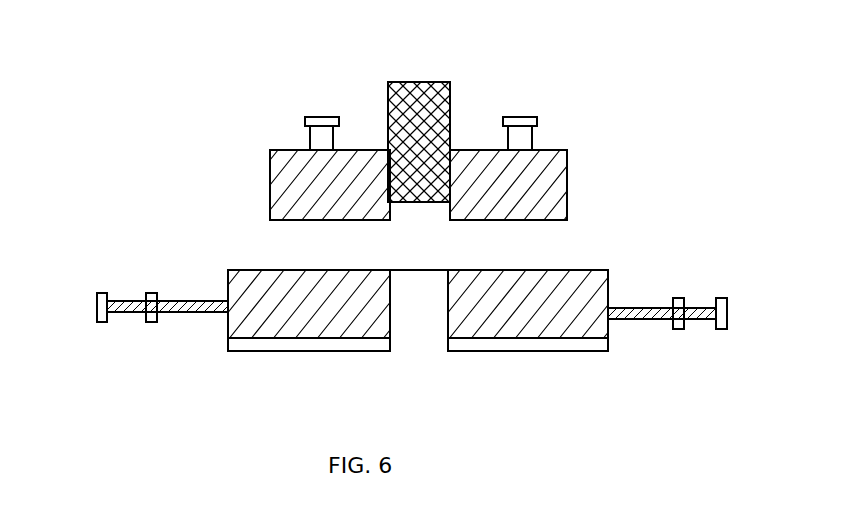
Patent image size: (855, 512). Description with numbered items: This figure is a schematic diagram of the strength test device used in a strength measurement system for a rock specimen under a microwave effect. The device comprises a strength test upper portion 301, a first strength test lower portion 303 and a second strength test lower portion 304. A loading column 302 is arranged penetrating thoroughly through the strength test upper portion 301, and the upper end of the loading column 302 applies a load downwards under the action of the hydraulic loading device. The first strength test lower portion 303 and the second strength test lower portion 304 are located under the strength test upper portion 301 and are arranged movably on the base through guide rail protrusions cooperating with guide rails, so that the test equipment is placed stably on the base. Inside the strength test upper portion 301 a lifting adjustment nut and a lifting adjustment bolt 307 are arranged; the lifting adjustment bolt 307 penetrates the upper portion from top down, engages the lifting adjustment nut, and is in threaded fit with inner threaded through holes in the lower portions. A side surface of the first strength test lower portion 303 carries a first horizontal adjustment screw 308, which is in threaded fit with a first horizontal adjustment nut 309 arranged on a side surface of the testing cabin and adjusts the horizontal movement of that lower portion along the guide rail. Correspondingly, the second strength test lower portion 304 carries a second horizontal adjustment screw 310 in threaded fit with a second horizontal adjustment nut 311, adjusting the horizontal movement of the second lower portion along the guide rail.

The strength test upper portion 301 is at (567, 157).
The loading column 302 is at (418, 81).
The first strength test lower portion 303 is at (228, 270).
The second strength test lower portion 304 is at (608, 270).
The lifting adjustment bolt 307 is at (320, 117).
The first horizontal adjustment screw 308 is at (97, 303).
The first horizontal adjustment nut 309 is at (151, 322).
The second horizontal adjustment screw 310 is at (727, 312).
The second horizontal adjustment nut 311 is at (680, 329).